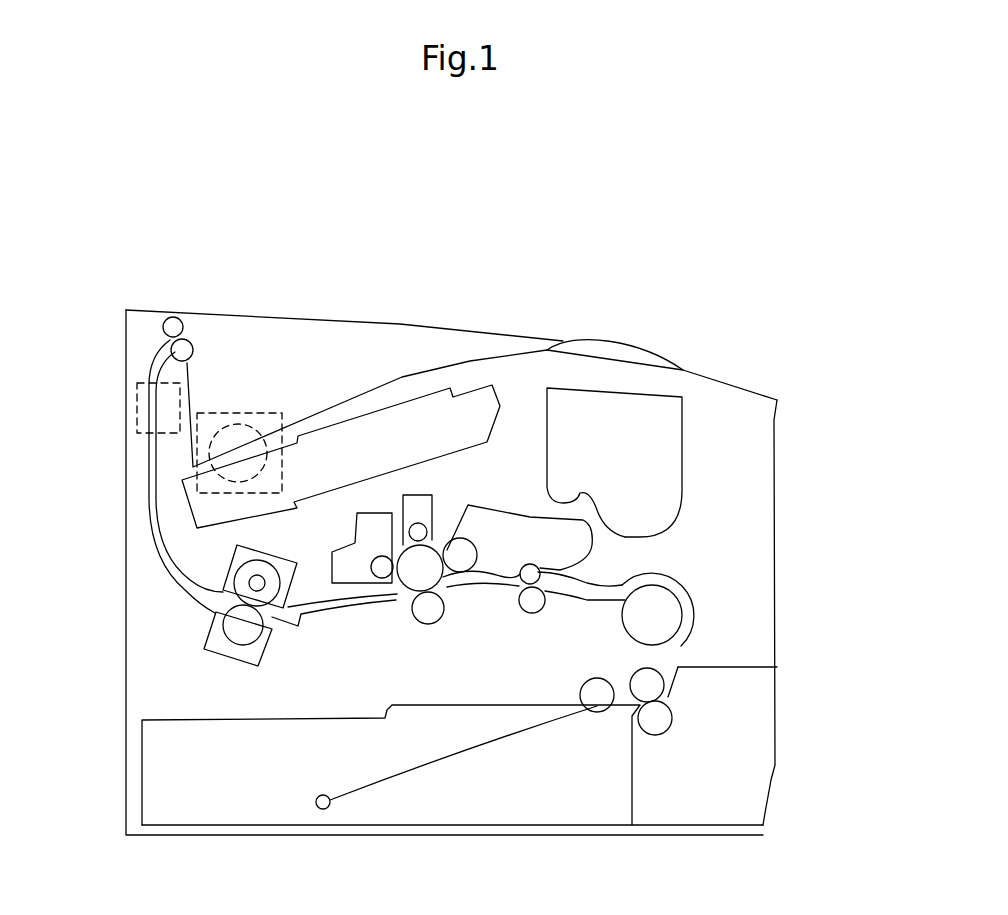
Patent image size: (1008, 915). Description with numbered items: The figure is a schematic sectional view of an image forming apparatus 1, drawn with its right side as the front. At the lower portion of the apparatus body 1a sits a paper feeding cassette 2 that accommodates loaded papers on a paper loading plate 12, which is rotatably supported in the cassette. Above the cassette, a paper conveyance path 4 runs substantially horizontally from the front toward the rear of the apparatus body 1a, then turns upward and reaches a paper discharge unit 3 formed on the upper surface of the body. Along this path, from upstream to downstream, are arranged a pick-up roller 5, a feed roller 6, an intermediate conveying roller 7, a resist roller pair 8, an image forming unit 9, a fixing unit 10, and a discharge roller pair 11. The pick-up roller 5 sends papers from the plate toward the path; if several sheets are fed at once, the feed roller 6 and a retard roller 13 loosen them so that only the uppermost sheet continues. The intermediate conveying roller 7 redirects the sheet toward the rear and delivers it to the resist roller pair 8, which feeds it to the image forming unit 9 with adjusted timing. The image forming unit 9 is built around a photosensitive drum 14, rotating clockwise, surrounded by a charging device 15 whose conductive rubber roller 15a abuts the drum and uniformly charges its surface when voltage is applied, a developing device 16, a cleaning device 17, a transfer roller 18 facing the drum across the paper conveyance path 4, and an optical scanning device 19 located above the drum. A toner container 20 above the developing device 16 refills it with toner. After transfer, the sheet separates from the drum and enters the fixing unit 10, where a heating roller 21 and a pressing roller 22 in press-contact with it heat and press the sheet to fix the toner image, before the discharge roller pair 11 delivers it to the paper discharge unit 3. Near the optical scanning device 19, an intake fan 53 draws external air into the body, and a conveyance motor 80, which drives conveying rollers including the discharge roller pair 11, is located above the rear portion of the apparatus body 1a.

The image forming apparatus 1 is at (648, 320).
The apparatus body 1a is at (777, 517).
The paper feeding cassette 2 is at (778, 752).
The paper discharge unit 3 is at (293, 422).
The paper conveyance path 4 is at (153, 528).
The pick-up roller 5 is at (597, 697).
The feed roller 6 is at (648, 685).
The intermediate conveying roller 7 is at (653, 615).
The resist roller pair 8 is at (550, 602).
The image forming unit 9 is at (422, 627).
The fixing unit 10 is at (200, 618).
The discharge roller pair 11 is at (187, 336).
The paper loading plate 12 is at (447, 762).
The retard roller 13 is at (655, 718).
The photosensitive drum 14 is at (422, 570).
The charging device 15 is at (420, 505).
The conductive rubber roller 15a is at (420, 532).
The developing device 16 is at (511, 538).
The cleaning device 17 is at (360, 568).
The transfer roller 18 is at (428, 608).
The optical scanning device 19 is at (387, 450).
The toner container 20 is at (637, 458).
The heating roller 21 is at (257, 583).
The pressing roller 22 is at (243, 625).
The intake fan 53 is at (252, 412).
The conveyance motor 80 is at (137, 410).